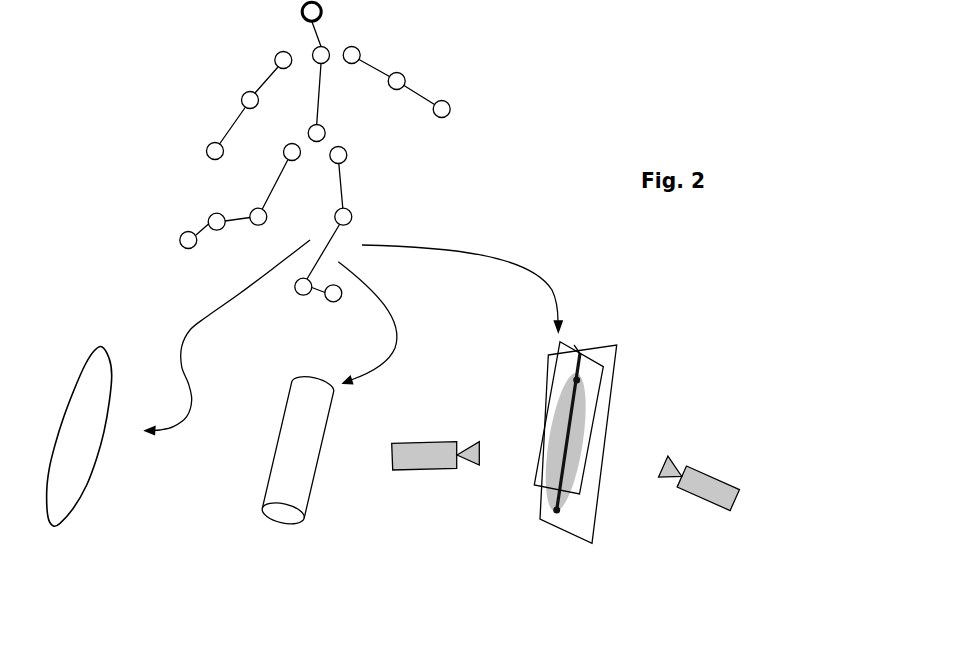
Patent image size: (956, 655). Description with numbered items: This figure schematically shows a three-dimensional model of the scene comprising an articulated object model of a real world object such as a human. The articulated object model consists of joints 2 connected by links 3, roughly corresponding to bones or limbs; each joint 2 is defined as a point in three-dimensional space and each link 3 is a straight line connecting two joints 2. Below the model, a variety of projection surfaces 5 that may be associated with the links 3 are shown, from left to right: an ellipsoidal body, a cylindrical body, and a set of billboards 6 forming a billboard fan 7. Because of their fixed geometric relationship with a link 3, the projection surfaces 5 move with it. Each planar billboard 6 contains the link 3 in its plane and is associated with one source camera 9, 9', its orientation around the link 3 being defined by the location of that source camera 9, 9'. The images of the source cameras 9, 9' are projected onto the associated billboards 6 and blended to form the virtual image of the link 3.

The joint 2 is at (301, 11).
The link 3 is at (233, 116).
The projection surface 5 is at (80, 480).
The billboard 6 is at (537, 510).
The billboard fan 7 is at (580, 353).
The source camera 9 is at (436, 485).
The source camera 9' is at (699, 509).